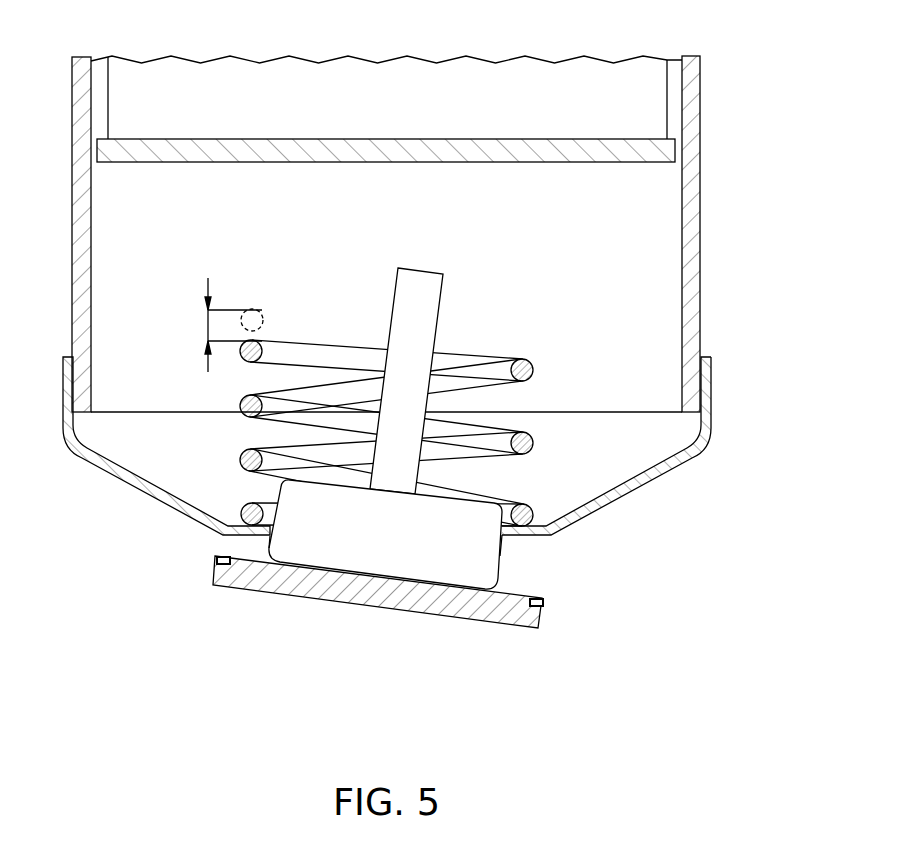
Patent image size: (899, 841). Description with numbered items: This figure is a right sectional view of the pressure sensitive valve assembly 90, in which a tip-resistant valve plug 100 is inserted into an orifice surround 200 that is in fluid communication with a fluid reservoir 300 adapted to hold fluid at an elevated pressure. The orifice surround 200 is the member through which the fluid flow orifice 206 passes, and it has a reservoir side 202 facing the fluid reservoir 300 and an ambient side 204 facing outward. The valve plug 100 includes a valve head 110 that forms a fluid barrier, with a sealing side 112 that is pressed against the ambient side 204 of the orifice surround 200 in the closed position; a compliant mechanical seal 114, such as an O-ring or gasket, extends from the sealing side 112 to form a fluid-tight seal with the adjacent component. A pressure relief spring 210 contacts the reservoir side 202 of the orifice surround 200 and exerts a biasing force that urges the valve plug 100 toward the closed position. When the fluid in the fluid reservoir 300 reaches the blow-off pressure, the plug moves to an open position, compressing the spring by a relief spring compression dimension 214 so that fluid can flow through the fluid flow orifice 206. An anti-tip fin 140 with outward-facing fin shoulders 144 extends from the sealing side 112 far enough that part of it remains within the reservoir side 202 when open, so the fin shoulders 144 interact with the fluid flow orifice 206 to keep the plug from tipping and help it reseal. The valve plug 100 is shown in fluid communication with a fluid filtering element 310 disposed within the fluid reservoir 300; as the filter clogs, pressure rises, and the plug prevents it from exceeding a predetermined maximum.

The pressure sensitive valve assembly 90 is at (315, 518).
The tip-resistant valve plug 100 is at (393, 518).
The valve head 110 is at (393, 636).
The sealing side 112 is at (245, 557).
The mechanical seal 114 is at (544, 605).
The anti-tip fin 140 is at (392, 428).
The fin shoulders 144 is at (272, 494).
The orifice surround 200 is at (441, 445).
The reservoir side 202 is at (646, 482).
The ambient side 204 is at (629, 503).
The fluid flow orifice 206 is at (505, 527).
The pressure relief spring 210 is at (342, 402).
The relief spring compression dimension 214 is at (207, 326).
The fluid reservoir 300 is at (441, 213).
The fluid filtering element 310 is at (220, 68).